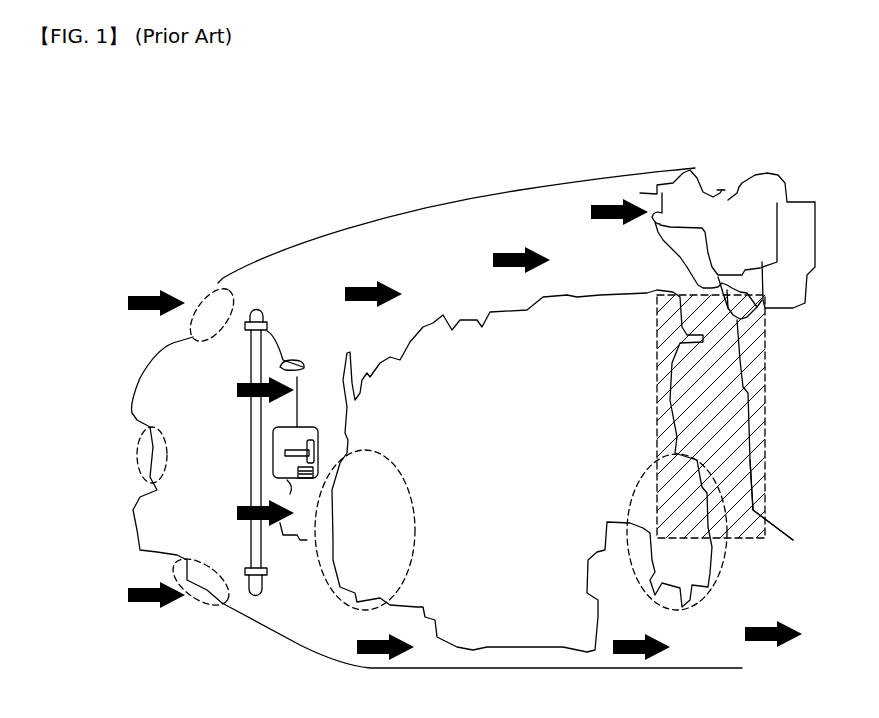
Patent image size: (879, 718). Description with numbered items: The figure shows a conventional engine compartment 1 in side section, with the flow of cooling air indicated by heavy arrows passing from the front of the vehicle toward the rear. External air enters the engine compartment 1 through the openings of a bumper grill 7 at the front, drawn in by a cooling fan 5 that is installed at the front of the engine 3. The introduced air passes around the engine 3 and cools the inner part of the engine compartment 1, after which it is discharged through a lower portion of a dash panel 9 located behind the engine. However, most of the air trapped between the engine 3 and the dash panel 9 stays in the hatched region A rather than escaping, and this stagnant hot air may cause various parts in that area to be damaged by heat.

The engine compartment 1 is at (445, 243).
The engine 3 is at (583, 330).
The cooling fan 5 is at (311, 424).
The bumper grill 7 is at (222, 603).
The dash panel 9 is at (793, 520).
The region A is at (766, 372).